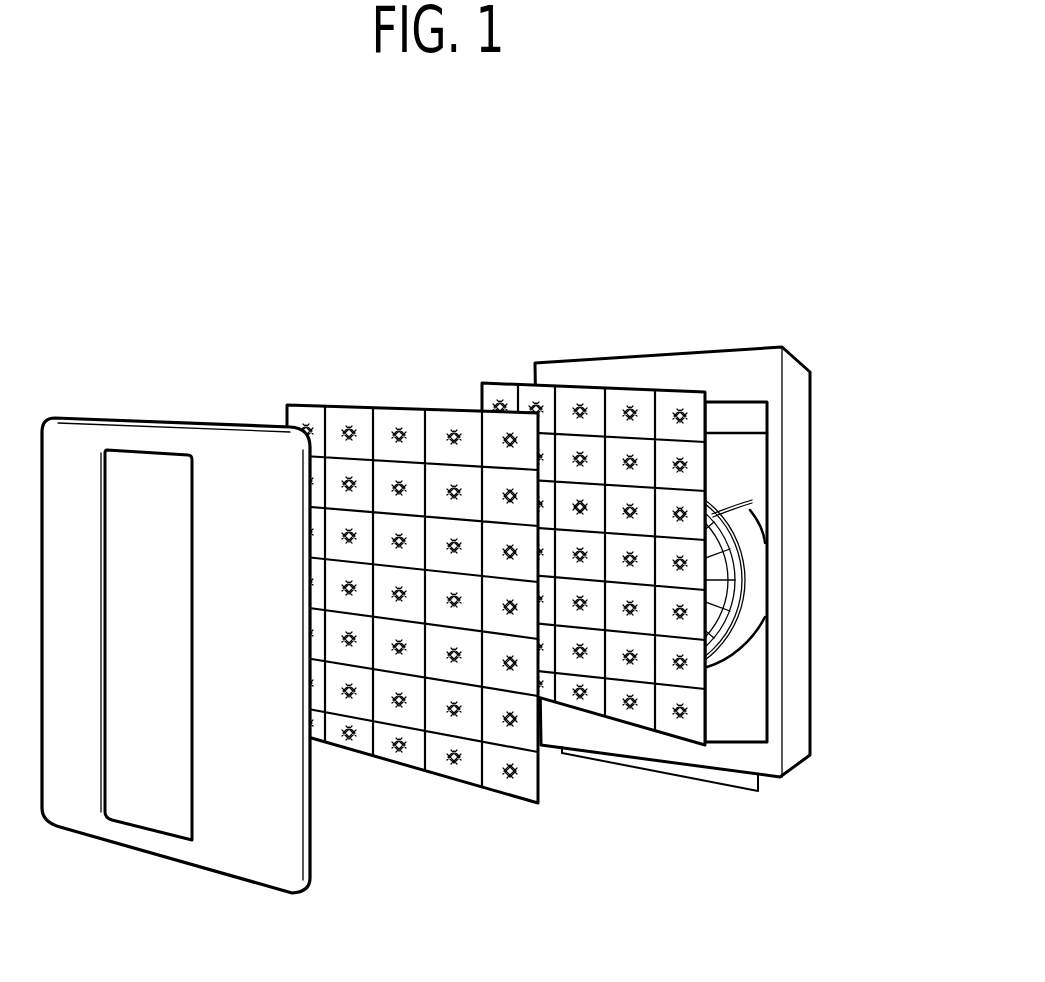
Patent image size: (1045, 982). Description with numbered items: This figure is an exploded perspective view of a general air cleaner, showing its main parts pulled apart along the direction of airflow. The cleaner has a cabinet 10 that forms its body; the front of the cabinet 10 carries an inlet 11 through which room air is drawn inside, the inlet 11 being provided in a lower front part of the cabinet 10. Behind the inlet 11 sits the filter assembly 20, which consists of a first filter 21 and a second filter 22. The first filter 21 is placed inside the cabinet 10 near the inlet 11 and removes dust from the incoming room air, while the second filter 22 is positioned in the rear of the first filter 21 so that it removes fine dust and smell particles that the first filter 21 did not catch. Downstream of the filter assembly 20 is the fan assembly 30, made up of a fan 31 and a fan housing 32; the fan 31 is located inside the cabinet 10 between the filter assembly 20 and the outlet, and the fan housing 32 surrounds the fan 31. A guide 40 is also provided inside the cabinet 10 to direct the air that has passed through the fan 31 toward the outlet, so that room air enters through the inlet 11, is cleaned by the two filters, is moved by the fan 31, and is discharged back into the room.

The cabinet 10 is at (220, 440).
The inlet 11 is at (146, 812).
The filter assembly 20 is at (480, 895).
The first filter 21 is at (510, 785).
The second filter 22 is at (688, 730).
The fan assembly 30 is at (878, 553).
The fan 31 is at (720, 617).
The fan housing 32 is at (750, 570).
The guide 40 is at (717, 507).